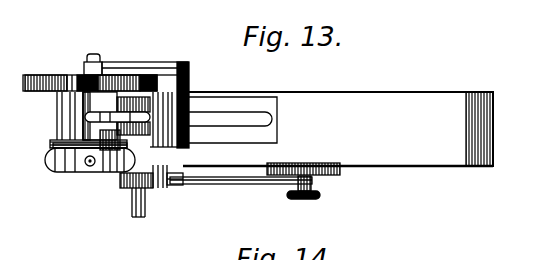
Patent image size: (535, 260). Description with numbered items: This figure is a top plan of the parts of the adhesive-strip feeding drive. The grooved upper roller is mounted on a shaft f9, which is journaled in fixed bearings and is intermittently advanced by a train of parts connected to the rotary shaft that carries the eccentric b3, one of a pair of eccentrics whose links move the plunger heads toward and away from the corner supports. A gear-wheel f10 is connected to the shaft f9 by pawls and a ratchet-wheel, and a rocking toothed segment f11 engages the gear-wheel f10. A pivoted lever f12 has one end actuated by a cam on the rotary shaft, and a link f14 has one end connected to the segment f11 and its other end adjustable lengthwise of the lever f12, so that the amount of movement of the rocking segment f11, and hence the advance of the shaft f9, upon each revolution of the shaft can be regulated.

The pivoted lever f12 is at (363, 186).
The eccentric b3 is at (67, 177).
The gear-wheel f10 is at (118, 183).
The toothed segment f11 is at (147, 187).
The shaft f9 is at (132, 208).
The link f14 is at (205, 178).